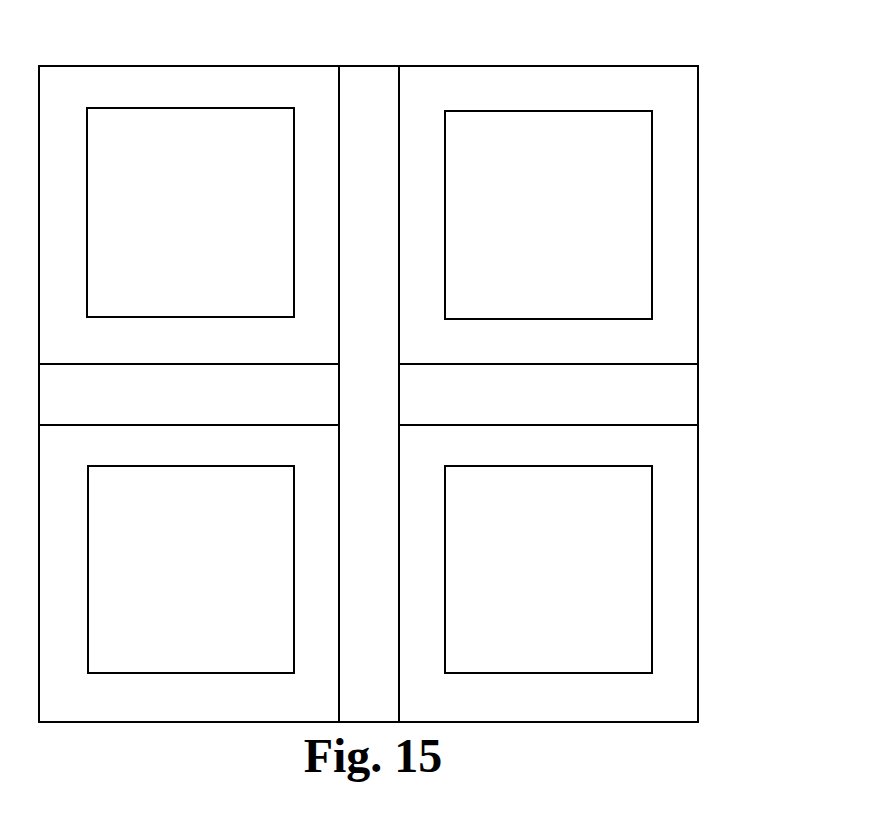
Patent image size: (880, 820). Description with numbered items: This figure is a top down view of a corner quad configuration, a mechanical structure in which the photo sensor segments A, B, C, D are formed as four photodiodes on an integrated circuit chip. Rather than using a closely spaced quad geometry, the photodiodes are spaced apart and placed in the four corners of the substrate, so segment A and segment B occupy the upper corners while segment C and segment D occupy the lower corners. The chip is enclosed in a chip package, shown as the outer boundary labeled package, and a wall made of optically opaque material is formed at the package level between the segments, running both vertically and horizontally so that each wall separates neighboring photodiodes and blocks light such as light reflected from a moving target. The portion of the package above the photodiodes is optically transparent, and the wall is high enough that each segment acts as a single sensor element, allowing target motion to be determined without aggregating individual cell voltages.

The element wall is at (370, 76).
The chip package is at (699, 100).
The photo sensor segment A is at (190, 212).
The photo sensor segment B is at (548, 215).
The photo sensor segment C is at (191, 569).
The photo sensor segment D is at (548, 569).